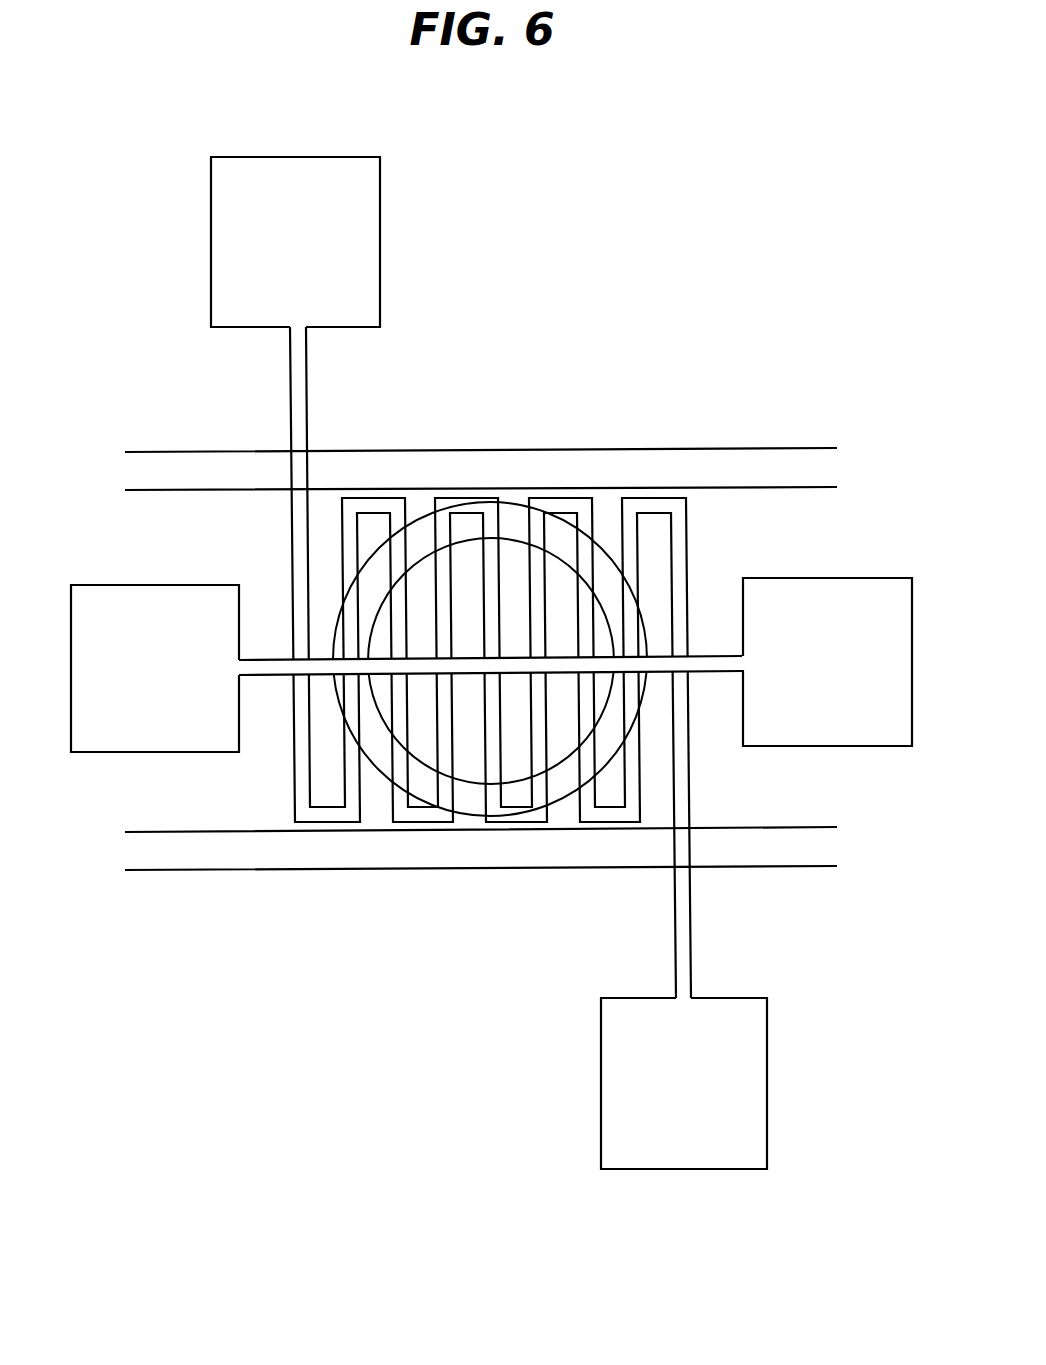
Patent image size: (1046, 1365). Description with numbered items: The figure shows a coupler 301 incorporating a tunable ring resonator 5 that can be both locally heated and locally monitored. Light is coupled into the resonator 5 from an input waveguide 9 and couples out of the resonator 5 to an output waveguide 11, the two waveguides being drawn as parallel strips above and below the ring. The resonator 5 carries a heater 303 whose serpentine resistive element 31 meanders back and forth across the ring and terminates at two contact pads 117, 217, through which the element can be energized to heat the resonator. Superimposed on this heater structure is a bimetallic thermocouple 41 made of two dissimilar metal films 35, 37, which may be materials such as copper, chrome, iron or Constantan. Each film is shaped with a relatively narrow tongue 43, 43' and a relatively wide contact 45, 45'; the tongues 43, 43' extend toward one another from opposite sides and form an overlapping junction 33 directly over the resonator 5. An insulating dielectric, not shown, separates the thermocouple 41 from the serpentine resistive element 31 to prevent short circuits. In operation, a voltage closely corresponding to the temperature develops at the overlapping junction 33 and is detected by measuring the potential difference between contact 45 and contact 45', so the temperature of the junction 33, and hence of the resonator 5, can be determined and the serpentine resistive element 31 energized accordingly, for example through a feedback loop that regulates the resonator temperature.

The tunable ring resonator 5 is at (607, 592).
The input waveguide 9 is at (508, 468).
The output waveguide 11 is at (267, 852).
The serpentine resistive element 31 is at (295, 753).
The overlapping junction 33 is at (488, 663).
The first dissimilar metal film 35 is at (132, 733).
The second dissimilar metal film 37 is at (807, 722).
The bimetallic thermocouple 41 is at (270, 542).
The tongue 43 is at (264, 606).
The tongue 43' is at (707, 607).
The contact 45 is at (146, 636).
The contact 45' is at (833, 633).
The contact pad 117 is at (381, 250).
The contact pad 217 is at (602, 1117).
The coupler 301 is at (446, 916).
The heater 303 is at (707, 763).